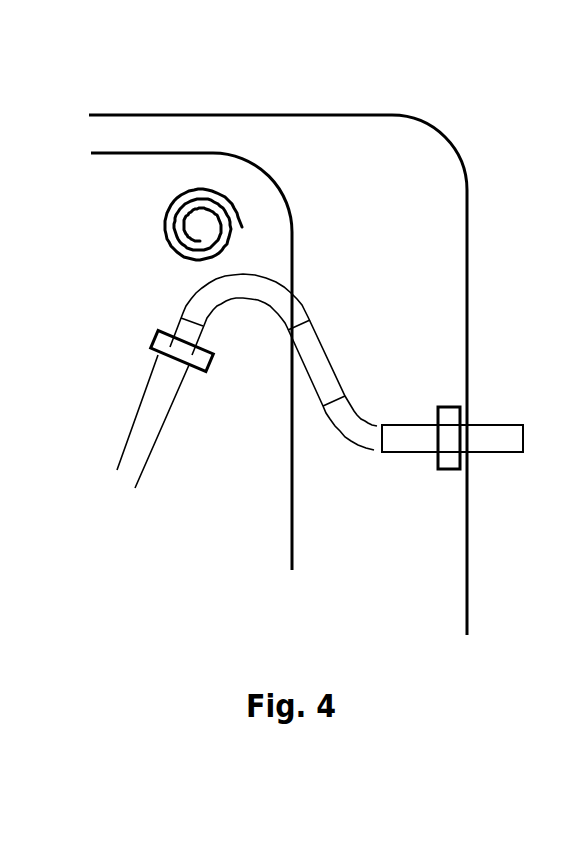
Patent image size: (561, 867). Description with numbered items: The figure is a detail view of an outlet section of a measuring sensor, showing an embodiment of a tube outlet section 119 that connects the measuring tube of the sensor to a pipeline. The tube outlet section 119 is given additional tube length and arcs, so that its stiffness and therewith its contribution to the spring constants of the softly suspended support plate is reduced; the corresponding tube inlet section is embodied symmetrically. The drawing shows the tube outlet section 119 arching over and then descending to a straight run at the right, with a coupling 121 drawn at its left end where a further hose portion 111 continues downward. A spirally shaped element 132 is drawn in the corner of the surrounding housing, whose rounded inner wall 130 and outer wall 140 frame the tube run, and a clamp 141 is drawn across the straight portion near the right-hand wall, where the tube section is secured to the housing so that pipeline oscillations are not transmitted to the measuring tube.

The fluid hose 111 is at (133, 455).
The tube outlet section 119 is at (272, 290).
The coupling 121 is at (200, 362).
The inner housing wall 130 is at (220, 148).
The coiled hose element 132 is at (233, 198).
The outer housing wall 140 is at (330, 113).
The clamp 141 is at (450, 413).